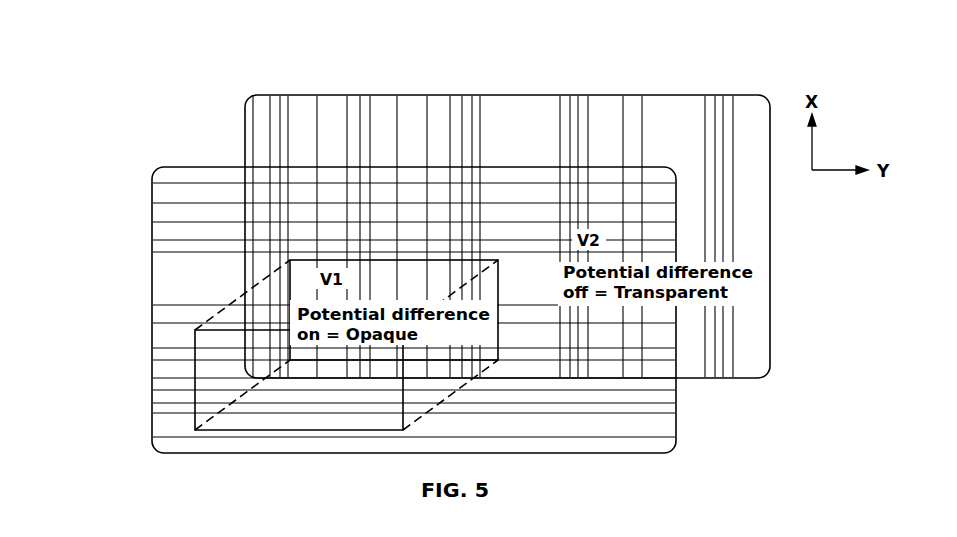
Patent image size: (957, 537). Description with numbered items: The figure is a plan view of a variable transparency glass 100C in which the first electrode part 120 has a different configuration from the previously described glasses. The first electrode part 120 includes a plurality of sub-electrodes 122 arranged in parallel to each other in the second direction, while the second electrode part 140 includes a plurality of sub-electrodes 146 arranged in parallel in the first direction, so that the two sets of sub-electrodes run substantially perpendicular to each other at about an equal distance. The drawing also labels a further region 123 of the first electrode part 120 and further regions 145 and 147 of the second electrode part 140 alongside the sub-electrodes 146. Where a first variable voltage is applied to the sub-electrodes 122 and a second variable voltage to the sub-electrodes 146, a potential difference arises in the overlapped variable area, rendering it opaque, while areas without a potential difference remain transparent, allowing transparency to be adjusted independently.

The variable transparency glass 100C is at (194, 66).
The first electrode part 120 is at (507, 191).
The sub-electrodes of the first electrode part 122 is at (497, 80).
The second electrode region 123 is at (633, 211).
The second electrode part 140 is at (348, 309).
The first horizontal electrode region 145 is at (129, 332).
The sub-electrodes of the second electrode part 146 is at (129, 332).
The third horizontal electrode region 147 is at (376, 440).